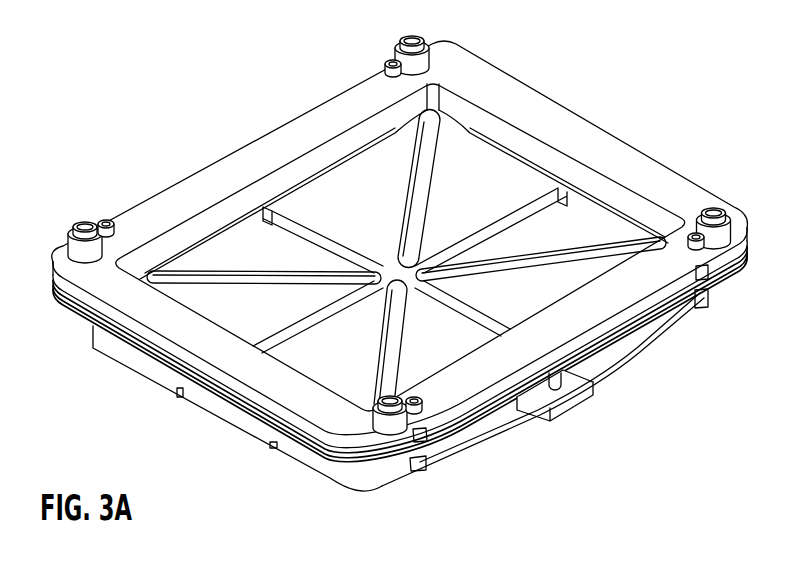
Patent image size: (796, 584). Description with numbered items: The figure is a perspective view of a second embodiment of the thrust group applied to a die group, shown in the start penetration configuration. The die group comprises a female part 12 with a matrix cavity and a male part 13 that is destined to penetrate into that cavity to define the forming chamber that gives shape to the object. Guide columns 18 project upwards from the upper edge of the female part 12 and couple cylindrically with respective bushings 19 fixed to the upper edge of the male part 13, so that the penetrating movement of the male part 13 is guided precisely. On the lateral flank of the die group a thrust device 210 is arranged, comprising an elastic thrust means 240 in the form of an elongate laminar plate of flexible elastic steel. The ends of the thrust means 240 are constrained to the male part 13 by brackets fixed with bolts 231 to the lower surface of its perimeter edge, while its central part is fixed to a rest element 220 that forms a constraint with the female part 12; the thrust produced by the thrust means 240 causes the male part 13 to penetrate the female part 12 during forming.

The female part 12 is at (292, 456).
The male part 13 is at (242, 162).
The guide column 18 is at (86, 225).
The bushing 19 is at (68, 238).
The bolt 231 is at (383, 68).
The rest element 220 is at (594, 396).
The thrust device 210 is at (576, 409).
The elastic thrust means 240 is at (488, 444).